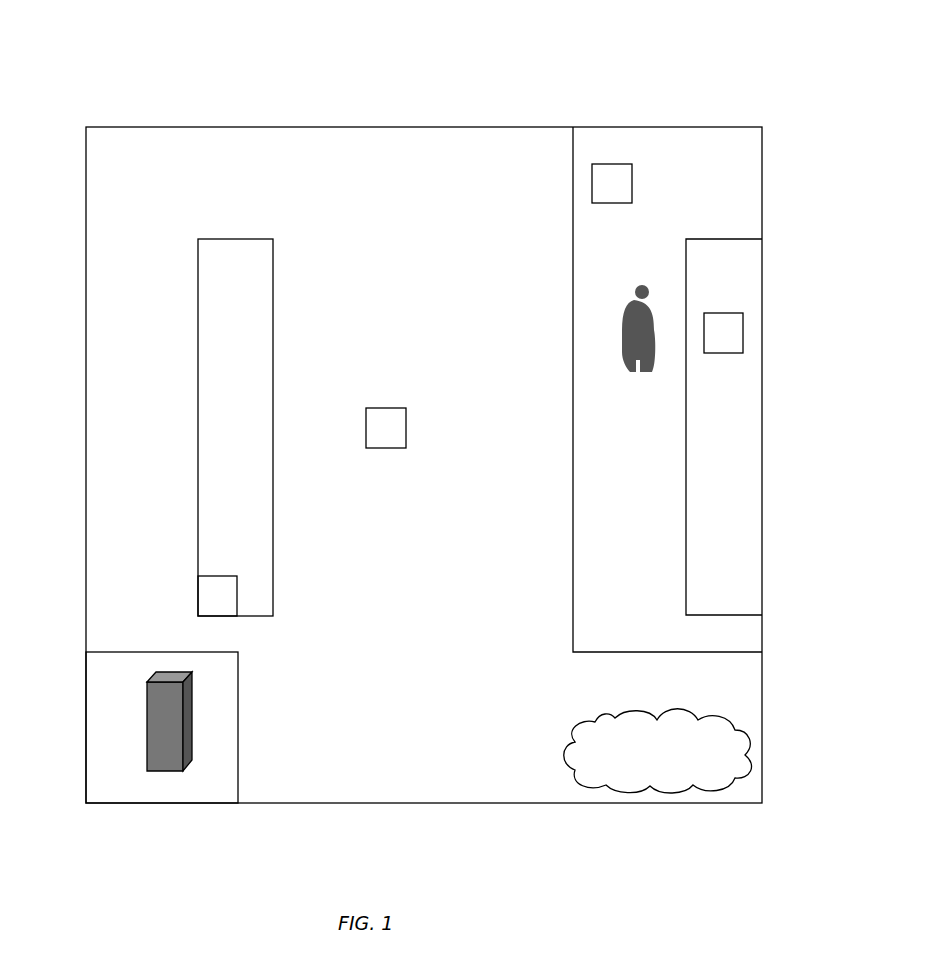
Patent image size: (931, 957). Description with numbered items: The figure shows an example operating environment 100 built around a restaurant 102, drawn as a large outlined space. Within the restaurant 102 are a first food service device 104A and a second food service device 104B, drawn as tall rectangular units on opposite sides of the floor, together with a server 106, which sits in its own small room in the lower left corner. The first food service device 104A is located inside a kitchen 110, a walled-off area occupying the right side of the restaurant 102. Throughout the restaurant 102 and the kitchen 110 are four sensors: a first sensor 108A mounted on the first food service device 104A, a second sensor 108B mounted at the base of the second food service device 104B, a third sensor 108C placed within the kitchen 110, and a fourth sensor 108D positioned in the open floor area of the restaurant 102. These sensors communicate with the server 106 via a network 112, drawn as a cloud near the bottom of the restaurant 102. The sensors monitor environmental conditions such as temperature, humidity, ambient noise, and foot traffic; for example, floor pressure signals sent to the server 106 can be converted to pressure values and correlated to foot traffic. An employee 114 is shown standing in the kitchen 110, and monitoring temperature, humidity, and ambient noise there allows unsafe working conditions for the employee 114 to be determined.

The operating environment 100 is at (157, 48).
The restaurant 102 is at (235, 127).
The first food service device 104A is at (686, 596).
The second food service device 104B is at (198, 256).
The server 106 is at (147, 720).
The first sensor 108A is at (722, 353).
The second sensor 108B is at (217, 597).
The third sensor 108C is at (592, 183).
The fourth sensor 108D is at (383, 448).
The kitchen 110 is at (713, 150).
The network 112 is at (615, 718).
The employee 114 is at (640, 283).